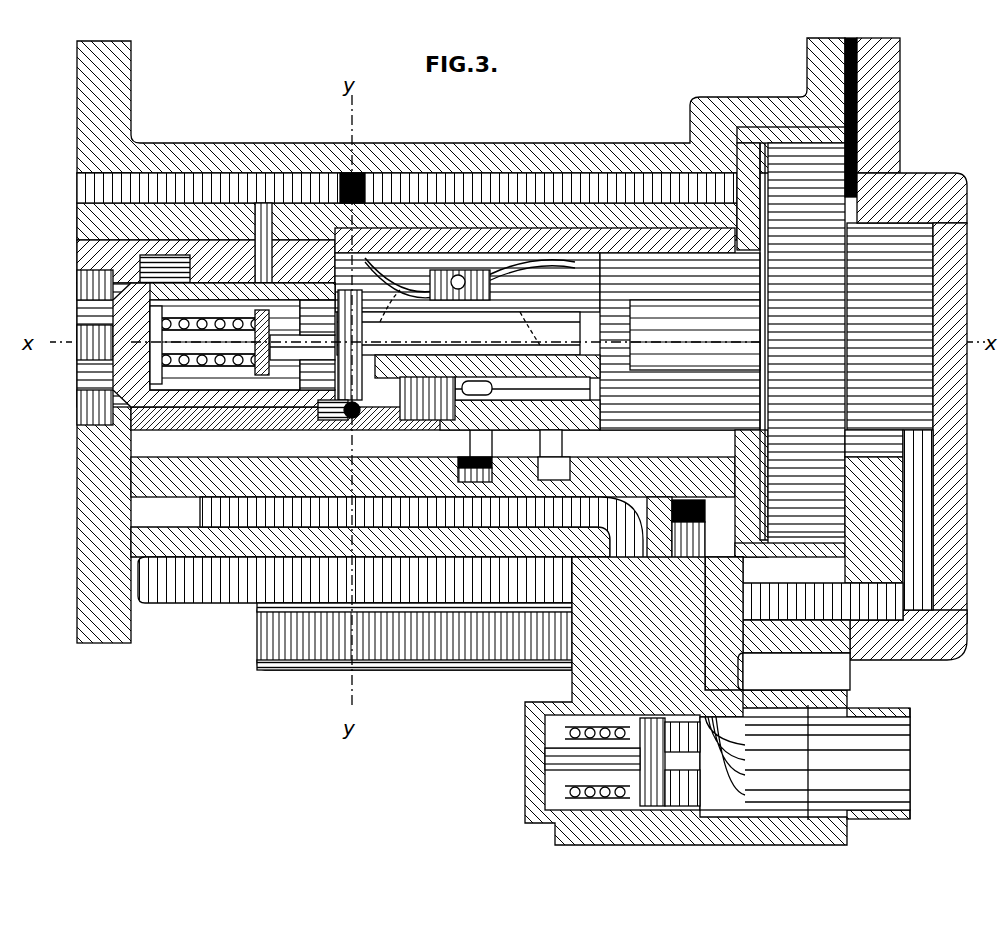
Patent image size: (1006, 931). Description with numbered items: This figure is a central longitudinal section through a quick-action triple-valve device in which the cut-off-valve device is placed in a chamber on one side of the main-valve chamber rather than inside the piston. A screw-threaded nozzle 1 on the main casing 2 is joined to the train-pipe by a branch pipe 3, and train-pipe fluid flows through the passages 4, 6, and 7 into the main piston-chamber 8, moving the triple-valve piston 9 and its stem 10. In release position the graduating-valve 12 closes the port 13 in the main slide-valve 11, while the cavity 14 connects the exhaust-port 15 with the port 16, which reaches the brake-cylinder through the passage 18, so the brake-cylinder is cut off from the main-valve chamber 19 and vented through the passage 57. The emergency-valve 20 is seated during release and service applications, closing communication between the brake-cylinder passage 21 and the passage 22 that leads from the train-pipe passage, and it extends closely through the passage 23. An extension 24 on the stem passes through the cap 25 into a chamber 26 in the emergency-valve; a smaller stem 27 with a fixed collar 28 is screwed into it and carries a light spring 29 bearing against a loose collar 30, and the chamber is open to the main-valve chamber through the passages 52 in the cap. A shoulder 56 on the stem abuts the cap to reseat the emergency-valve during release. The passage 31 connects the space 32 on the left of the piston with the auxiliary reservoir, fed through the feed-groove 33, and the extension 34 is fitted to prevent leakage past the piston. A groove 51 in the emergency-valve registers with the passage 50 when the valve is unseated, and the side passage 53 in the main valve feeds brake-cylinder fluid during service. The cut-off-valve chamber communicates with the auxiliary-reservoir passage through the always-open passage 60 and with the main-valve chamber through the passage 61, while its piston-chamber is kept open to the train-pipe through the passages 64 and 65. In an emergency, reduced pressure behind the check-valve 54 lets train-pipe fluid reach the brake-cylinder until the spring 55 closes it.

The screw-threaded nozzle 1 is at (840, 690).
The main casing 2 is at (505, 150).
The branch pipe 3 is at (880, 708).
The train-pipe passage 4 is at (805, 762).
The passage 6 is at (793, 620).
The passage 7 is at (918, 520).
The main piston-chamber 8 is at (850, 340).
The triple-valve piston 9 is at (768, 493).
The stem 10 is at (458, 322).
The main slide-valve 11 is at (487, 392).
The graduating-valve 12 is at (522, 385).
The port 13 is at (427, 398).
The cavity 14 is at (472, 482).
The exhaust-port 15 is at (551, 443).
The port 16 is at (471, 366).
The passage 18 is at (492, 463).
The main-valve chamber 19 is at (467, 282).
The emergency-valve 20 is at (224, 354).
The brake-cylinder passage 21 is at (104, 347).
The passage 22 is at (190, 268).
The passage 23 is at (308, 393).
The extension 24 is at (302, 361).
The cap 25 is at (333, 410).
The chamber 26 is at (225, 345).
The smaller stem 27 is at (211, 335).
The fixed collar 28 is at (170, 345).
The light spring 29 is at (211, 371).
The loose collar 30 is at (257, 342).
The auxiliary-reservoir passage 31 is at (407, 188).
The space 32 is at (737, 150).
The feed-groove 33 is at (752, 127).
The extension 34 is at (698, 395).
The passage 50 is at (272, 225).
The groove 51 is at (242, 293).
The passages 52 is at (317, 320).
The side passage 53 is at (480, 388).
The check-valve 54 is at (672, 740).
The spring 55 is at (597, 771).
The shoulder 56 is at (356, 345).
The passage 57 is at (570, 470).
The passage 60 is at (365, 187).
The passage 61 is at (351, 401).
The passage 64 is at (688, 613).
The passage 65 is at (672, 510).